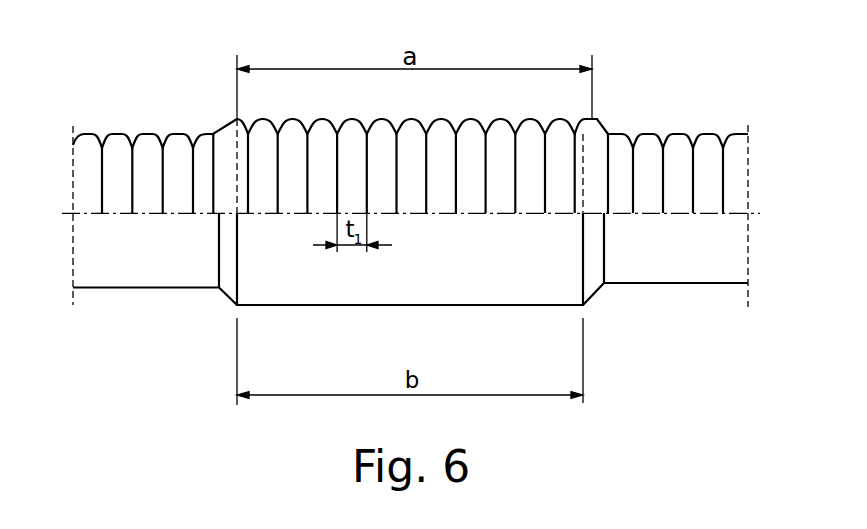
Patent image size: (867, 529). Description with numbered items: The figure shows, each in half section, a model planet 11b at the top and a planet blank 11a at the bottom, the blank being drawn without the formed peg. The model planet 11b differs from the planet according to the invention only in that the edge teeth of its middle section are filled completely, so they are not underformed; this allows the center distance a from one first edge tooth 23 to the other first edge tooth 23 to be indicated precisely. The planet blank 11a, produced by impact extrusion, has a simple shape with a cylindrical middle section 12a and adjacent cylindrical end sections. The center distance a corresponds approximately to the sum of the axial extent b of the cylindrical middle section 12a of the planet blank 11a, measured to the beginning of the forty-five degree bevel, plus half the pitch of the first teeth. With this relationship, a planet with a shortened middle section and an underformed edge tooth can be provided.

The planet blank 11a is at (148, 272).
The model planet 11b is at (148, 148).
The cylindrical middle section 12a is at (493, 287).
The first edge teeth 23 is at (594, 131).